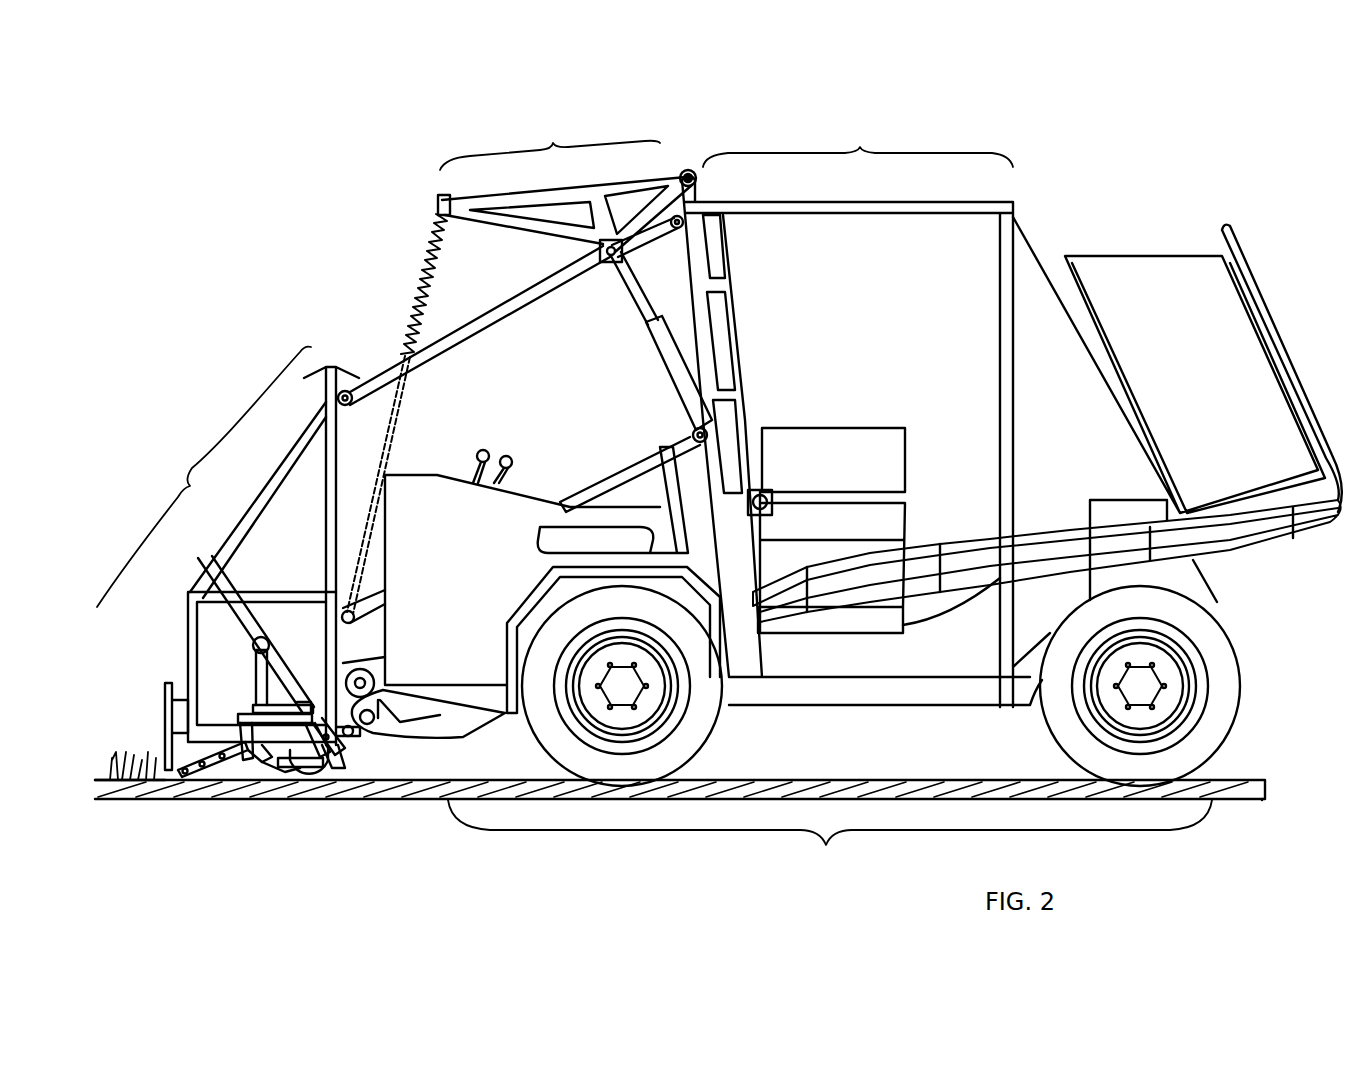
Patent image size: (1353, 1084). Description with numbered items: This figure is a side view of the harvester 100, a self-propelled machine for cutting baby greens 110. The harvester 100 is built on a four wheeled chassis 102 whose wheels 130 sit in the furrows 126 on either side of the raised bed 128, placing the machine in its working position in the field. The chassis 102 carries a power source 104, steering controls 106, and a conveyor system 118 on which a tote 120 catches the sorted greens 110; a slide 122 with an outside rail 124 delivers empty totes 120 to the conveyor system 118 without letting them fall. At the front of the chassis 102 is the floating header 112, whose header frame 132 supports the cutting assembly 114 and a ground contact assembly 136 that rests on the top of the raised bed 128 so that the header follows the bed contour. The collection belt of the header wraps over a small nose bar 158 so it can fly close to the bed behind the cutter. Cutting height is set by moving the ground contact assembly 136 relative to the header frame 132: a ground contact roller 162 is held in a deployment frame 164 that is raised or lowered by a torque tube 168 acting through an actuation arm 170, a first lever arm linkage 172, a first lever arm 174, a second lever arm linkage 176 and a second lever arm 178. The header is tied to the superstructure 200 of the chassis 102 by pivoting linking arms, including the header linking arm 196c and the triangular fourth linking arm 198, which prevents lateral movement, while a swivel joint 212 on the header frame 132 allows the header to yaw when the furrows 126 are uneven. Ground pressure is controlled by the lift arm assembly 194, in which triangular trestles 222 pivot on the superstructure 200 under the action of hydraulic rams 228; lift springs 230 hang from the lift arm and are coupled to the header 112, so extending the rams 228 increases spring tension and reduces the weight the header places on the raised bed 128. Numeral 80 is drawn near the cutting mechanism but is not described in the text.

The cutting head 80 is at (250, 723).
The harvester 100 is at (769, 128).
The chassis 102 is at (830, 839).
The power source 104 is at (1142, 526).
The steering controls 106 is at (507, 456).
The baby greens 110 is at (125, 752).
The floating header 112 is at (204, 477).
The cutting assembly 114 is at (165, 777).
The conveyor system 118 is at (816, 478).
The tote 120 is at (900, 545).
The slide 122 is at (1154, 357).
The outside rail 124 is at (1262, 307).
The furrows 126 is at (1256, 802).
The raised bed 128 is at (1262, 780).
The wheels 130 is at (640, 788).
The header frame 132 is at (287, 455).
The ground contact assembly 136 is at (330, 760).
The nose bar 158 is at (181, 774).
The ground contact roller 162 is at (305, 770).
The deployment frame 164 is at (283, 760).
The torque tube 168 is at (226, 578).
The actuation arm 170 is at (258, 680).
The first lever arm linkage 172 is at (300, 695).
The first lever arm 174 is at (345, 765).
The second lever arm linkage 176 is at (265, 752).
The second lever arm 178 is at (250, 758).
The lift arm assembly 194 is at (550, 142).
The header linking arm 196c is at (503, 336).
The fourth linking arm 198 is at (624, 470).
The superstructure 200 is at (858, 141).
The swivel joint 212 is at (380, 745).
The trestle 222 is at (548, 225).
The hydraulic ram 228 is at (641, 314).
The lift springs 230 is at (412, 320).